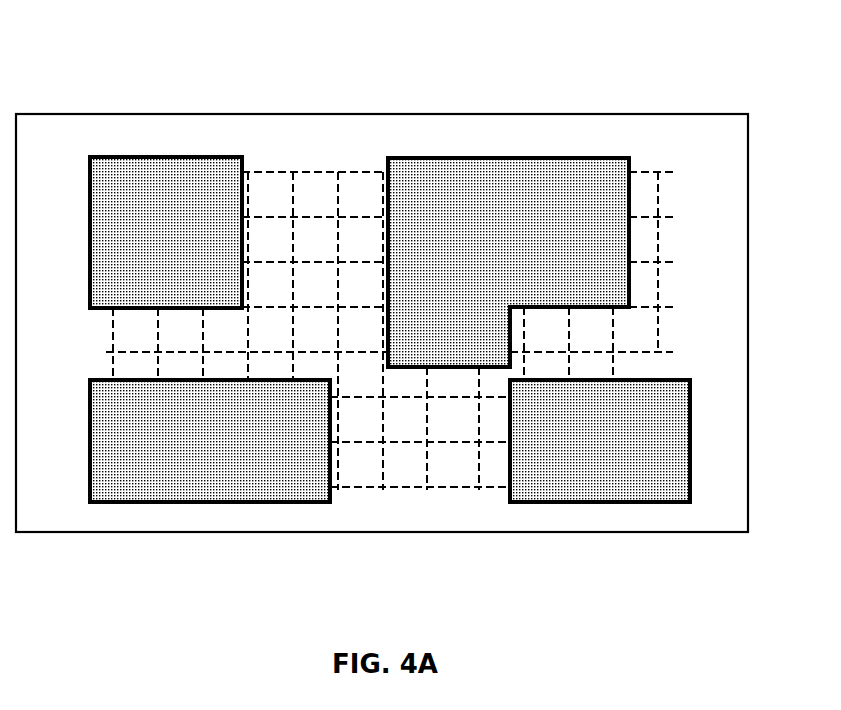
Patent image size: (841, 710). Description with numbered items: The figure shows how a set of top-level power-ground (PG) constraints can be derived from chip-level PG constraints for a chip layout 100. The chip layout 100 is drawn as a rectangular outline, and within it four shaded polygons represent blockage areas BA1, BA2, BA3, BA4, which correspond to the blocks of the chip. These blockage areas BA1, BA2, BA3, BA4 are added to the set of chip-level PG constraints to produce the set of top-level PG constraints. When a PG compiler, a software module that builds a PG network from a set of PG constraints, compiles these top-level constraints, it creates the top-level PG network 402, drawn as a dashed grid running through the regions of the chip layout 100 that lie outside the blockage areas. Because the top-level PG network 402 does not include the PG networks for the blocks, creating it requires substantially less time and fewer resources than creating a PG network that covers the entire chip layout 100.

The chip layout 100 is at (17, 532).
The top-level PG network 402 is at (315, 173).
The blockage area BA1 is at (90, 265).
The blockage area BA2 is at (548, 157).
The blockage area BA3 is at (90, 480).
The blockage area BA4 is at (718, 453).